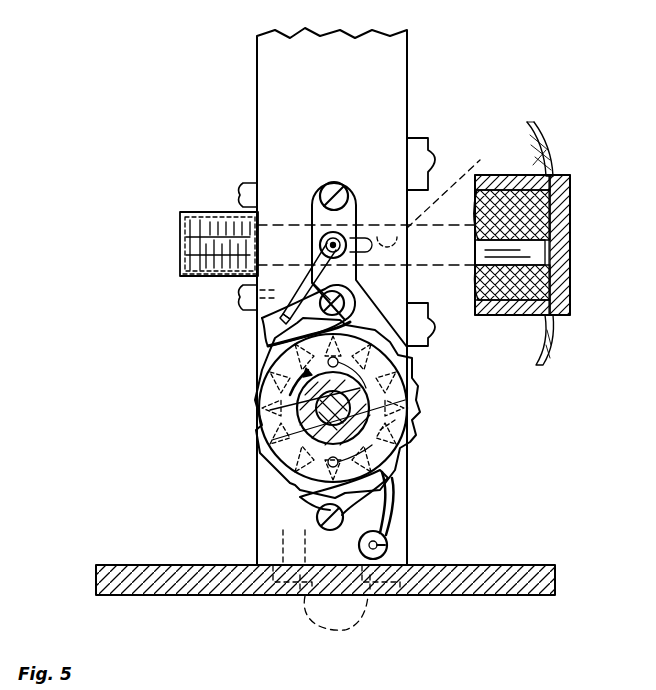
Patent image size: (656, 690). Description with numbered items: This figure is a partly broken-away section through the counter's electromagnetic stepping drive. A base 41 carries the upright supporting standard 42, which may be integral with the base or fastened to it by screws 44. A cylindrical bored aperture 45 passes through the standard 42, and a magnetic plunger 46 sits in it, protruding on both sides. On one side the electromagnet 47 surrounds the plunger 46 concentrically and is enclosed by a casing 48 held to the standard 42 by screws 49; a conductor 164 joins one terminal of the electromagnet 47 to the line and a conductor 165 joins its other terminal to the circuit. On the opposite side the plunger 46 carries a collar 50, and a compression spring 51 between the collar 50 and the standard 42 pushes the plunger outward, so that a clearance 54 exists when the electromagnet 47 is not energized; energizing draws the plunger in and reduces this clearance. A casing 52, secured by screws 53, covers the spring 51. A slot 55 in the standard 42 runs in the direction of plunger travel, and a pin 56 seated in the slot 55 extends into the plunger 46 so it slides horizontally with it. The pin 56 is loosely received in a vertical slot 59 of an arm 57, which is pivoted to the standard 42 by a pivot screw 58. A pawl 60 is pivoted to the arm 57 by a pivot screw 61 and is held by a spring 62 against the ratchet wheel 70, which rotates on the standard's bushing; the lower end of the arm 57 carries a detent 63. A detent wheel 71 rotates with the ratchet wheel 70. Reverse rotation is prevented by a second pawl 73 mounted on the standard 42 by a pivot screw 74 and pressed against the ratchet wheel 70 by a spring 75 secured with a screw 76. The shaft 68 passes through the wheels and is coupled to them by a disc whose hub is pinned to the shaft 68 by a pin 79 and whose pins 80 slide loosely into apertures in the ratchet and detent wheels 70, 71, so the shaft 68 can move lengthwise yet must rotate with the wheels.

The base 41 is at (195, 596).
The supporting standard 42 is at (400, 503).
The screws 44 is at (336, 580).
The aperture 45 is at (457, 184).
The magnetic plunger 46 is at (546, 262).
The electromagnet 47 is at (540, 280).
The casing 48 is at (570, 196).
The screws 49 is at (428, 140).
The collar 50 is at (182, 263).
The compression spring 51 is at (212, 283).
The casing 52 is at (182, 221).
The screws 53 is at (243, 186).
The clearance 54 is at (546, 238).
The slot 55 is at (405, 288).
The pin 56 is at (312, 232).
The arm 57 is at (320, 182).
The pivot screw 58 is at (332, 182).
The slot 59 is at (420, 308).
The pawl 60 is at (300, 346).
The pivot screw 61 is at (300, 328).
The spring 62 is at (292, 323).
The detent 63 is at (408, 397).
The shaft 68 is at (302, 428).
The ratchet wheel 70 is at (402, 441).
The detent wheel 71 is at (395, 422).
The pawl 73 is at (338, 506).
The pivot screw 74 is at (324, 526).
The spring 75 is at (388, 530).
The screw 76 is at (388, 546).
The pin 79 is at (329, 465).
The pins 80 is at (340, 463).
The conductor 164 is at (537, 126).
The conductor 165 is at (548, 362).